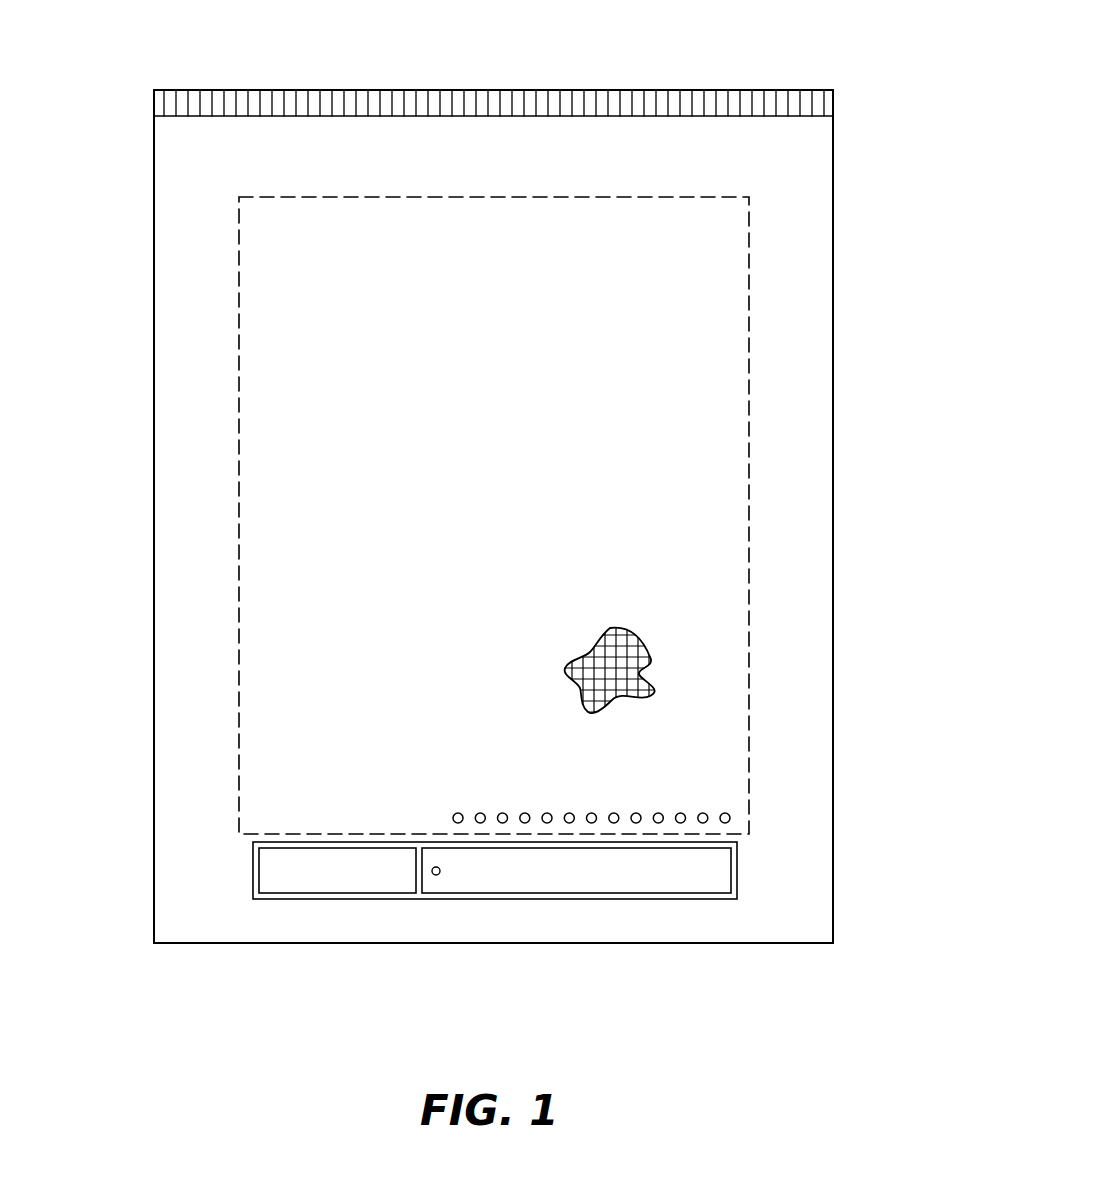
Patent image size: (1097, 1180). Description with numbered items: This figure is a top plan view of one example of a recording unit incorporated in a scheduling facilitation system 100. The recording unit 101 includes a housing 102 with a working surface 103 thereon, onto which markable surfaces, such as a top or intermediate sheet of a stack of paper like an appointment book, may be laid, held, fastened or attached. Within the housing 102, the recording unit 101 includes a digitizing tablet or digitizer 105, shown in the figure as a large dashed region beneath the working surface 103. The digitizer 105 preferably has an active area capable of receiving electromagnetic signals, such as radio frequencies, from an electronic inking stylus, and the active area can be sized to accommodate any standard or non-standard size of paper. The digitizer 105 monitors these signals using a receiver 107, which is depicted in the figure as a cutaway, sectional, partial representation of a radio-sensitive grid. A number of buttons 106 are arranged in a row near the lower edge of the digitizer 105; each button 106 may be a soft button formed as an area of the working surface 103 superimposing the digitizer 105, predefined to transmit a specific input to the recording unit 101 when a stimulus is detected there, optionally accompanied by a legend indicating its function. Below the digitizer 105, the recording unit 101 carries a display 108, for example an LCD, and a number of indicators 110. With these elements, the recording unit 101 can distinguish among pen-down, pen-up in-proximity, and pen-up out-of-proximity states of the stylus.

The scheduling facilitation system 100 is at (783, 27).
The recording unit 101 is at (154, 205).
The housing 102 is at (154, 312).
The working surface 103 is at (640, 169).
The digitizing tablet or digitizer 105 is at (239, 425).
The buttons 106 is at (730, 818).
The receiver 107 is at (620, 640).
The display 108 is at (347, 879).
The indicators 110 is at (440, 875).